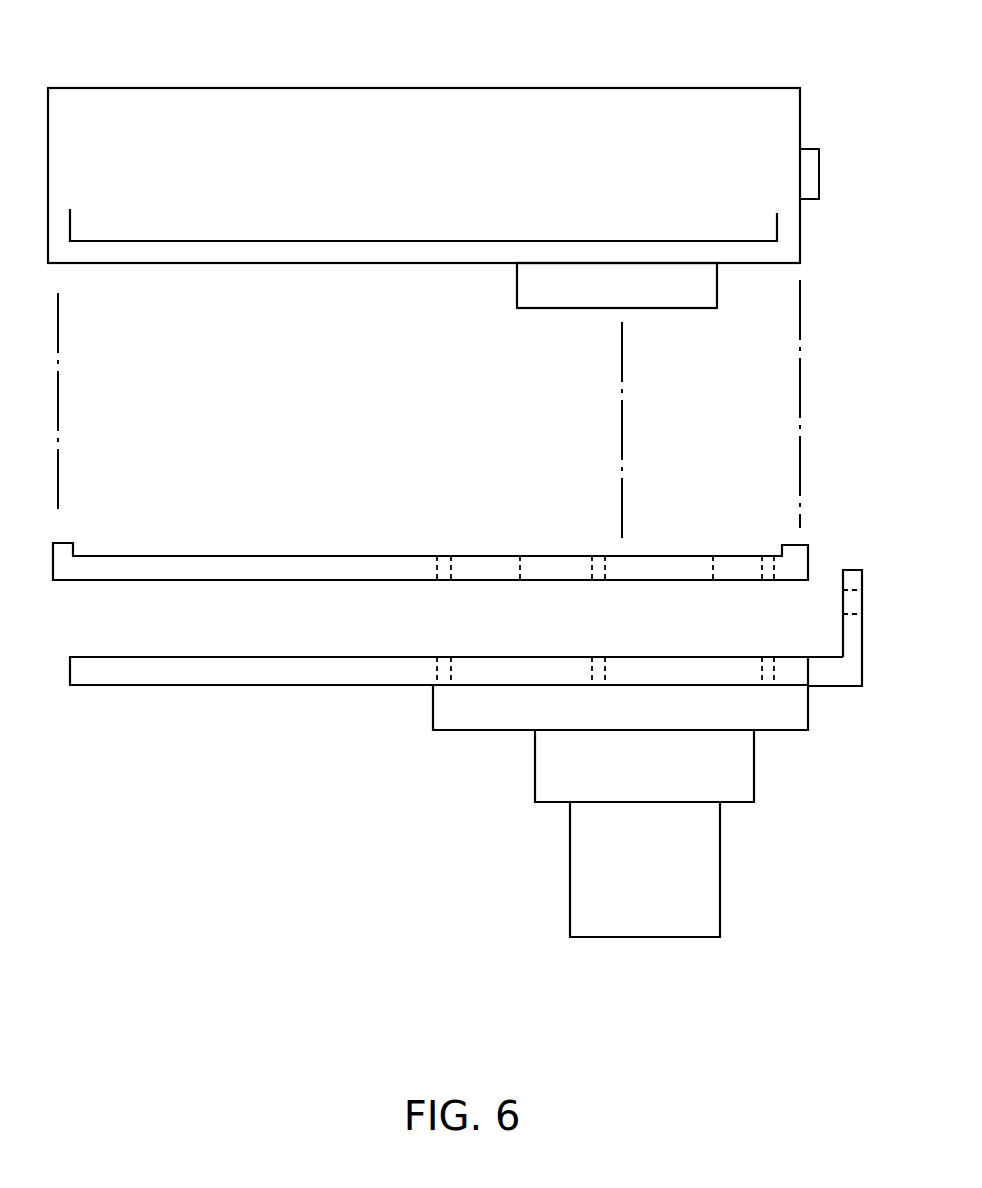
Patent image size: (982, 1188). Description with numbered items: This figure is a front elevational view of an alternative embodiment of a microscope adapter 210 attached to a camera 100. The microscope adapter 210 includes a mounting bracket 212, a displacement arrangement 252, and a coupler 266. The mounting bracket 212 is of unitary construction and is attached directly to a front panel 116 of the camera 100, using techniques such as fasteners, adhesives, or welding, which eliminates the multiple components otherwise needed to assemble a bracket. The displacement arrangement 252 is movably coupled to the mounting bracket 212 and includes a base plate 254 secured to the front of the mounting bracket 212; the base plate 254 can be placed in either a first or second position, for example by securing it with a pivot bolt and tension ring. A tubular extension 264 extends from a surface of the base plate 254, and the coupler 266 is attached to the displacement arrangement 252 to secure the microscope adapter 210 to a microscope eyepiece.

The camera 100 is at (612, 88).
The front panel 116 is at (216, 556).
The mounting bracket 212 is at (178, 685).
The base plate 254 is at (808, 712).
The tubular extension 264 is at (754, 772).
The coupler 266 is at (720, 878).
The displacement arrangement 252 is at (428, 813).
The microscope adapter 210 is at (365, 993).